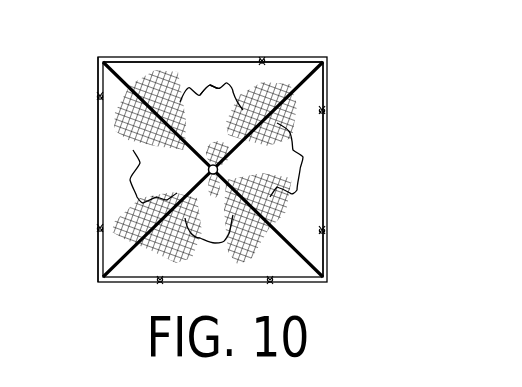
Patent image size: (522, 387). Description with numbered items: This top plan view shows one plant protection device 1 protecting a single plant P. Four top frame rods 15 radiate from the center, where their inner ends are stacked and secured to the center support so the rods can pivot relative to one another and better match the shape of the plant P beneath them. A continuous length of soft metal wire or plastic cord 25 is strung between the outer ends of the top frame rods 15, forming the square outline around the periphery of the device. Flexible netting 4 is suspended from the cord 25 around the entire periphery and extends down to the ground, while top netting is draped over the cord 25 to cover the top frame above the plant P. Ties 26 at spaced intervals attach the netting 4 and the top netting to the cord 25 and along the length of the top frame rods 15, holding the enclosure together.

The plant protection device 1 is at (98, 212).
The flexible netting 4 is at (328, 237).
The top frame rods 15 is at (160, 98).
The cord 25 is at (280, 61).
The ties 26 is at (328, 113).
The plant P is at (209, 84).